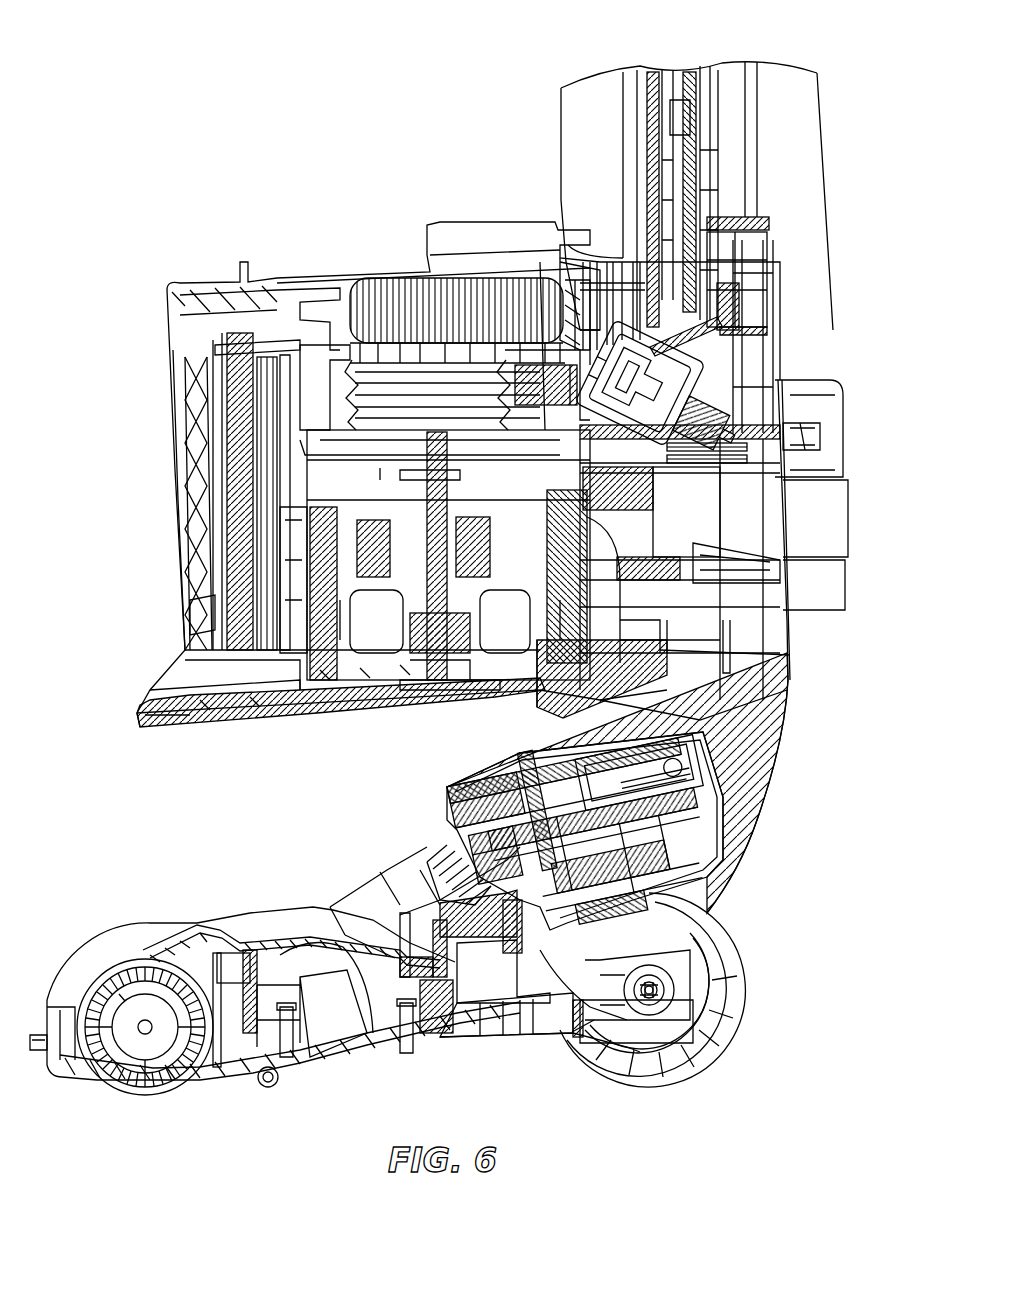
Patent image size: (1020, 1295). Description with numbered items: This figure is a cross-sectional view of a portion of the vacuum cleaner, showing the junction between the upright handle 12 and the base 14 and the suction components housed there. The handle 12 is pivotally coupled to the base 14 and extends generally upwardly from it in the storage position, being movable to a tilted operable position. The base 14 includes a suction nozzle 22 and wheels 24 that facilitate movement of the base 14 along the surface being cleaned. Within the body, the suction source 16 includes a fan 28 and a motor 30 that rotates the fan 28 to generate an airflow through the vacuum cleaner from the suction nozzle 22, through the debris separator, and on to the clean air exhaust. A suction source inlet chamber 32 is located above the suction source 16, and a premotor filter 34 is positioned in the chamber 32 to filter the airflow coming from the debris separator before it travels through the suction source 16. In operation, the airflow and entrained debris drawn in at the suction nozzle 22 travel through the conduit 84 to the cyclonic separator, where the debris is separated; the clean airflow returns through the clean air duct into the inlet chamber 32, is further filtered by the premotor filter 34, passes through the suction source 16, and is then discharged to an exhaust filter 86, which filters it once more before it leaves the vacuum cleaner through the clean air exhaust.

The handle 12 is at (705, 95).
The base 14 is at (250, 922).
The suction source 16 is at (770, 565).
The suction nozzle 22 is at (82, 1085).
The wheels 24 is at (742, 975).
The fan 28 is at (325, 465).
The motor 30 is at (405, 685).
The suction source inlet chamber 32 is at (550, 335).
The premotor filter 34 is at (400, 300).
The conduit 84 is at (437, 850).
The exhaust filter 86 is at (255, 425).